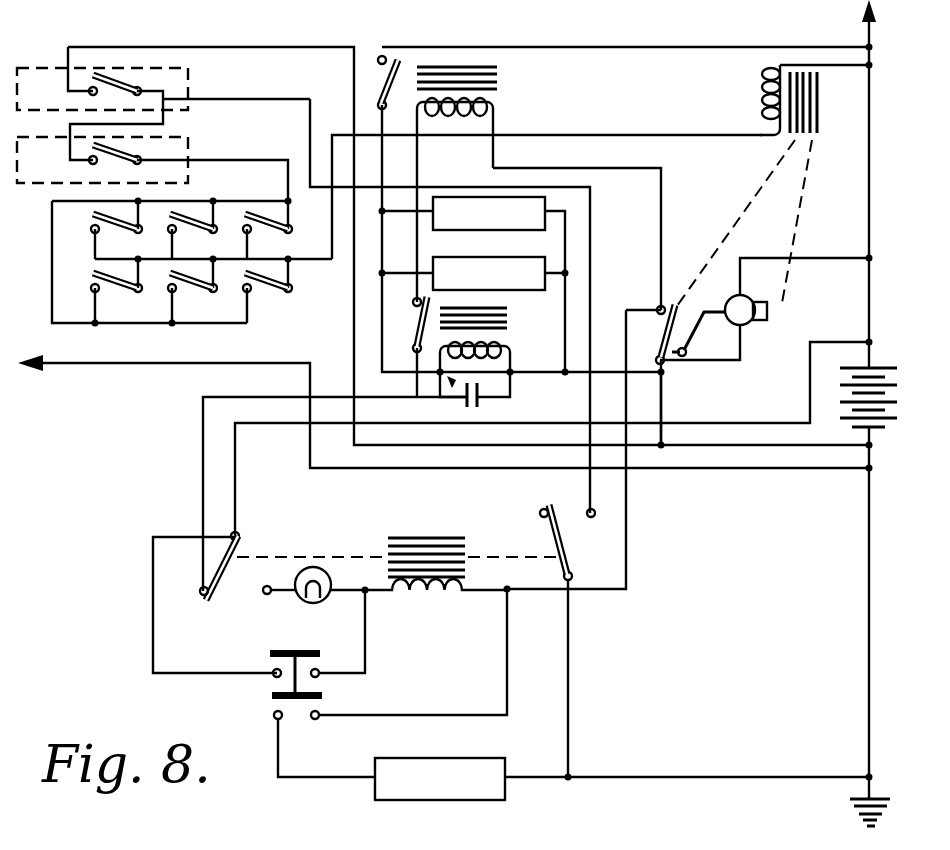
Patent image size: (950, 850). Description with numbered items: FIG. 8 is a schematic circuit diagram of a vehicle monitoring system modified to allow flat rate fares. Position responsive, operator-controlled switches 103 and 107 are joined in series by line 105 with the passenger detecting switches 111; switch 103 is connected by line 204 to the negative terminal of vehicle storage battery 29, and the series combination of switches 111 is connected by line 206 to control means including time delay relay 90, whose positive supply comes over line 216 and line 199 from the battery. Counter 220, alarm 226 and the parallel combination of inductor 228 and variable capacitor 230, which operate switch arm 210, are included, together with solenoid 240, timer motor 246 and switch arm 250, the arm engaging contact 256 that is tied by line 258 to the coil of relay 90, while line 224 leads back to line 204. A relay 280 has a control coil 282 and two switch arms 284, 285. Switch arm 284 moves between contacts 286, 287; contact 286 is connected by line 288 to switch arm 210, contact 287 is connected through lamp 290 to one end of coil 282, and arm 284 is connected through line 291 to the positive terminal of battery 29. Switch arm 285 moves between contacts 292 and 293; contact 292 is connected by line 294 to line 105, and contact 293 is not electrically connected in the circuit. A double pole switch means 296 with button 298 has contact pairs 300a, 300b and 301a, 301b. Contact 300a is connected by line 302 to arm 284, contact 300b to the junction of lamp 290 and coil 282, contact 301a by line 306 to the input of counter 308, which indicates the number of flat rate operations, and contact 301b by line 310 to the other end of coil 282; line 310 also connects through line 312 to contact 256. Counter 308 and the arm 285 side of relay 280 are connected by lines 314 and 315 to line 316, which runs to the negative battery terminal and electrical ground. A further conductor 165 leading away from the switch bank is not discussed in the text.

The position responsive, operator-controlled switch 103 is at (144, 74).
The line 105 is at (147, 128).
The position responsive, operator-controlled switch 107 is at (142, 149).
The passenger detecting switches 111 is at (130, 230).
The conductor 165 is at (82, 366).
The line 204 is at (356, 24).
The line 294 is at (330, 90).
The line 216 is at (651, 47).
The time delay relay 90 is at (507, 87).
The line 199 is at (866, 32).
The solenoid 240 is at (763, 100).
The line 206 is at (666, 131).
The line 258 is at (662, 178).
The counter 220 is at (479, 172).
The alarm device 226 is at (520, 257).
The switch arm 210 is at (415, 327).
The control coil 228 is at (490, 357).
The variable capacitor 230 is at (460, 404).
The switch contact 256 is at (655, 305).
The switch arm 250 is at (690, 274).
The timer motor 246 is at (748, 325).
The line 224 is at (682, 392).
The line 291 is at (235, 467).
The vehicle storage battery 29 is at (912, 348).
The line 288 is at (203, 478).
The line 302 is at (153, 633).
The switch arm 284 is at (240, 556).
The contact 286 is at (203, 598).
The relay 280 is at (440, 512).
The contact 287 is at (273, 596).
The lamp 290 is at (297, 598).
The relay control coil 282 is at (413, 597).
The line 312 is at (628, 500).
The contact 293 is at (541, 510).
The switch arm 285 is at (555, 537).
The contact 292 is at (590, 518).
The line 315 is at (571, 662).
The line 316 is at (775, 777).
The switch operator 298 is at (290, 650).
The double pole switch means 296 is at (335, 698).
The contact 300a is at (273, 676).
The contact 300b is at (322, 678).
The contact 301a is at (273, 715).
The contact 301b is at (313, 719).
The line 310 is at (455, 718).
The line 306 is at (285, 780).
The counter 308 is at (403, 801).
The line 314 is at (537, 780).